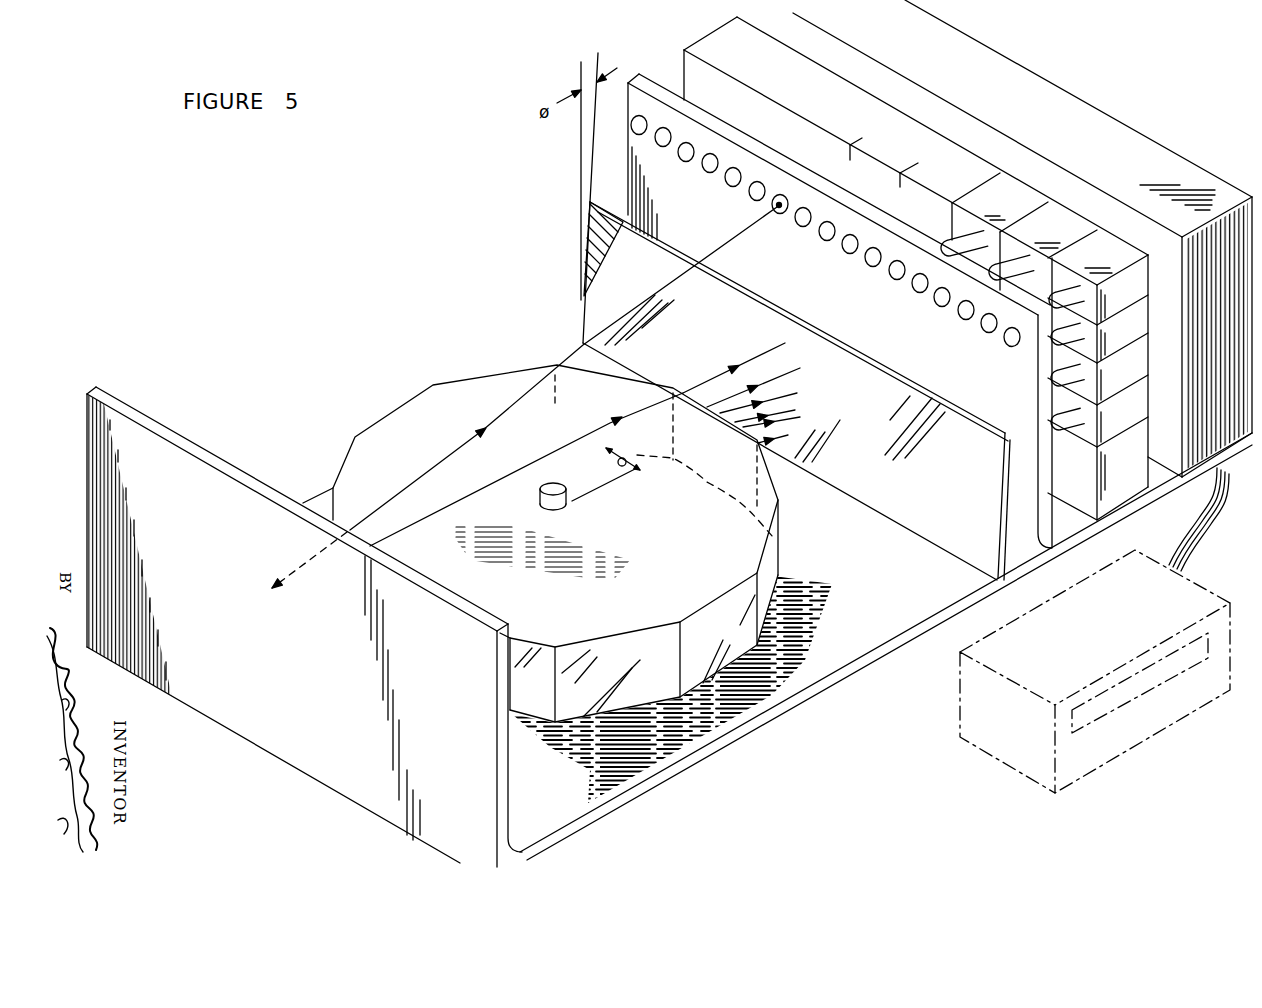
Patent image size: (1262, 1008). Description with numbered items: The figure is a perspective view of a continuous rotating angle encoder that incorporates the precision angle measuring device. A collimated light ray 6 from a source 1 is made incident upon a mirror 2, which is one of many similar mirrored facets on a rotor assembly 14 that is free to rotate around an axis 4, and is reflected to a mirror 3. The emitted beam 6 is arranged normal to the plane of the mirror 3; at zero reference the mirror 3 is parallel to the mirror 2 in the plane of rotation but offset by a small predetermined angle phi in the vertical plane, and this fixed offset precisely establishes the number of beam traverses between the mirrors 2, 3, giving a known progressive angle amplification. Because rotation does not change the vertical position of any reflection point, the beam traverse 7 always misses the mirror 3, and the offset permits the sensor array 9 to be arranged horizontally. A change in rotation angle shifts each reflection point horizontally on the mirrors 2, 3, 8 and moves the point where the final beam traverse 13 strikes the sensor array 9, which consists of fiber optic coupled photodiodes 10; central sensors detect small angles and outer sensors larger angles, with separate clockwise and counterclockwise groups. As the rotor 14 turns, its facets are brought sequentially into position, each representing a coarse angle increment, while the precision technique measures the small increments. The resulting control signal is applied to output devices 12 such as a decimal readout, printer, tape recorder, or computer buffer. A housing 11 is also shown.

The source 1 is at (797, 430).
The mirror 2 is at (727, 513).
The mirror 3 is at (942, 490).
The axis 4 is at (590, 479).
The collimated light ray 6 is at (782, 443).
The beam traverse 7 is at (738, 370).
The mirror 8 is at (218, 458).
The sensor array 9 is at (967, 322).
The fiber optic coupled photodiodes 10 is at (1036, 190).
The detector housing 11 is at (1090, 100).
The output devices 12 is at (958, 735).
The beam traverse 13 is at (721, 248).
The rotor assembly 14 is at (407, 398).